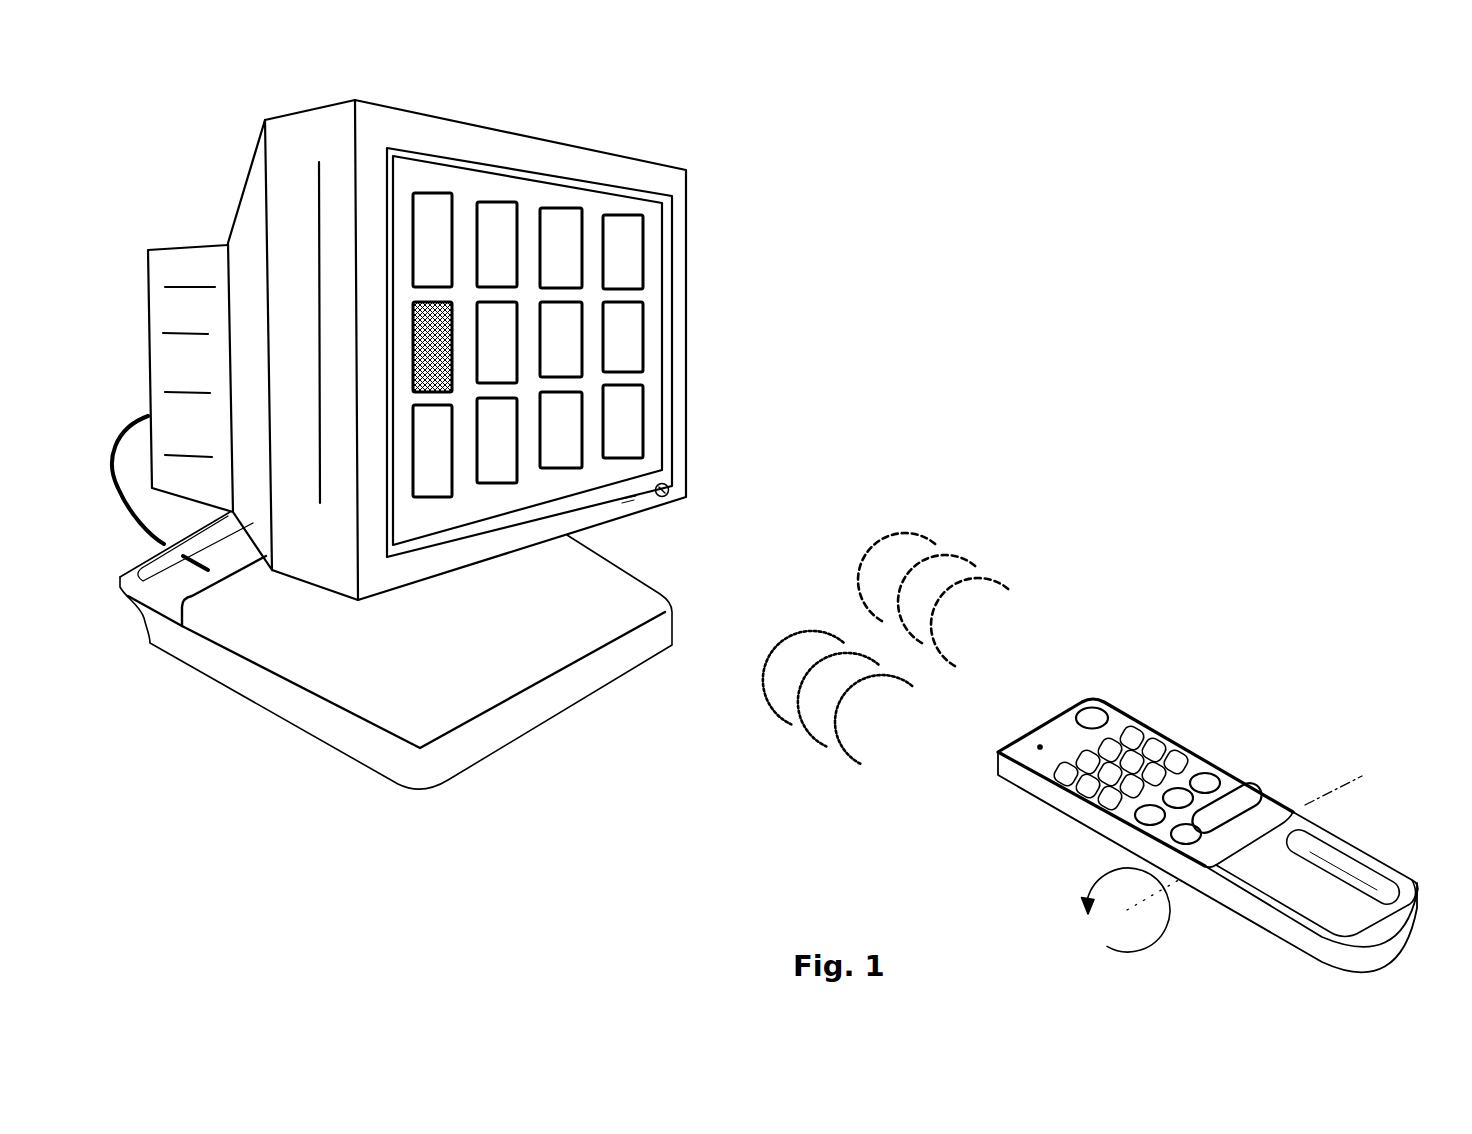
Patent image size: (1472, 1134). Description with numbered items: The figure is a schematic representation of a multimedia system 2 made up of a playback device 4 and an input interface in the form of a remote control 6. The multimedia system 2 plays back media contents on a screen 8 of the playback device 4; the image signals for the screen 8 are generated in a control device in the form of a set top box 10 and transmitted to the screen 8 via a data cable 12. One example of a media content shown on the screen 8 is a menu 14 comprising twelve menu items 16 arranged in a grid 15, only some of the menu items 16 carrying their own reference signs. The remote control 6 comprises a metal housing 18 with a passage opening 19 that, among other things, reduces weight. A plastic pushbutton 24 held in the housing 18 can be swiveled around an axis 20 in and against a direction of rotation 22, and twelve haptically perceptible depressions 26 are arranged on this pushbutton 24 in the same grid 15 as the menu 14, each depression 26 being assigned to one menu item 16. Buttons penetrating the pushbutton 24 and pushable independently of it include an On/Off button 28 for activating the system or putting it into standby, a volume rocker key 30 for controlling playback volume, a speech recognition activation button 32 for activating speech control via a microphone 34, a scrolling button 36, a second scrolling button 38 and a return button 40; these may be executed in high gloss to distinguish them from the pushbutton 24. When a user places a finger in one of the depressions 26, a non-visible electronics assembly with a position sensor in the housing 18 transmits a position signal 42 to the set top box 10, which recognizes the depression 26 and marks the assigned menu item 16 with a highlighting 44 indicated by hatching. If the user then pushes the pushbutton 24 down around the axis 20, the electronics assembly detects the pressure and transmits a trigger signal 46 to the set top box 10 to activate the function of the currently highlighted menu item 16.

The multimedia system 2 is at (1306, 216).
The playback device 4 is at (783, 186).
The remote control 6 is at (1361, 692).
The screen 8 is at (687, 329).
The set top box 10 is at (673, 623).
The data cable 12 is at (142, 415).
The menu 14 is at (652, 207).
The grid 15 is at (1127, 693).
The menu items 16 is at (437, 193).
The metal housing 18 is at (1382, 855).
The passage opening 19 is at (1337, 860).
The axis 20 is at (1365, 772).
The direction of rotation 22 is at (1107, 946).
The pushbutton 24 is at (1278, 805).
The depressions 26 is at (1180, 760).
The On/Off button 28 is at (1087, 714).
The volume rocker key 30 is at (1243, 797).
The speech recognition activation button 32 is at (1187, 842).
The microphone 34 is at (1037, 746).
The scrolling button 36 is at (1150, 815).
The second scrolling button 38 is at (1205, 782).
The return button 40 is at (1182, 795).
The position signal 42 is at (912, 531).
The highlighting 44 is at (431, 392).
The trigger signal 46 is at (778, 726).